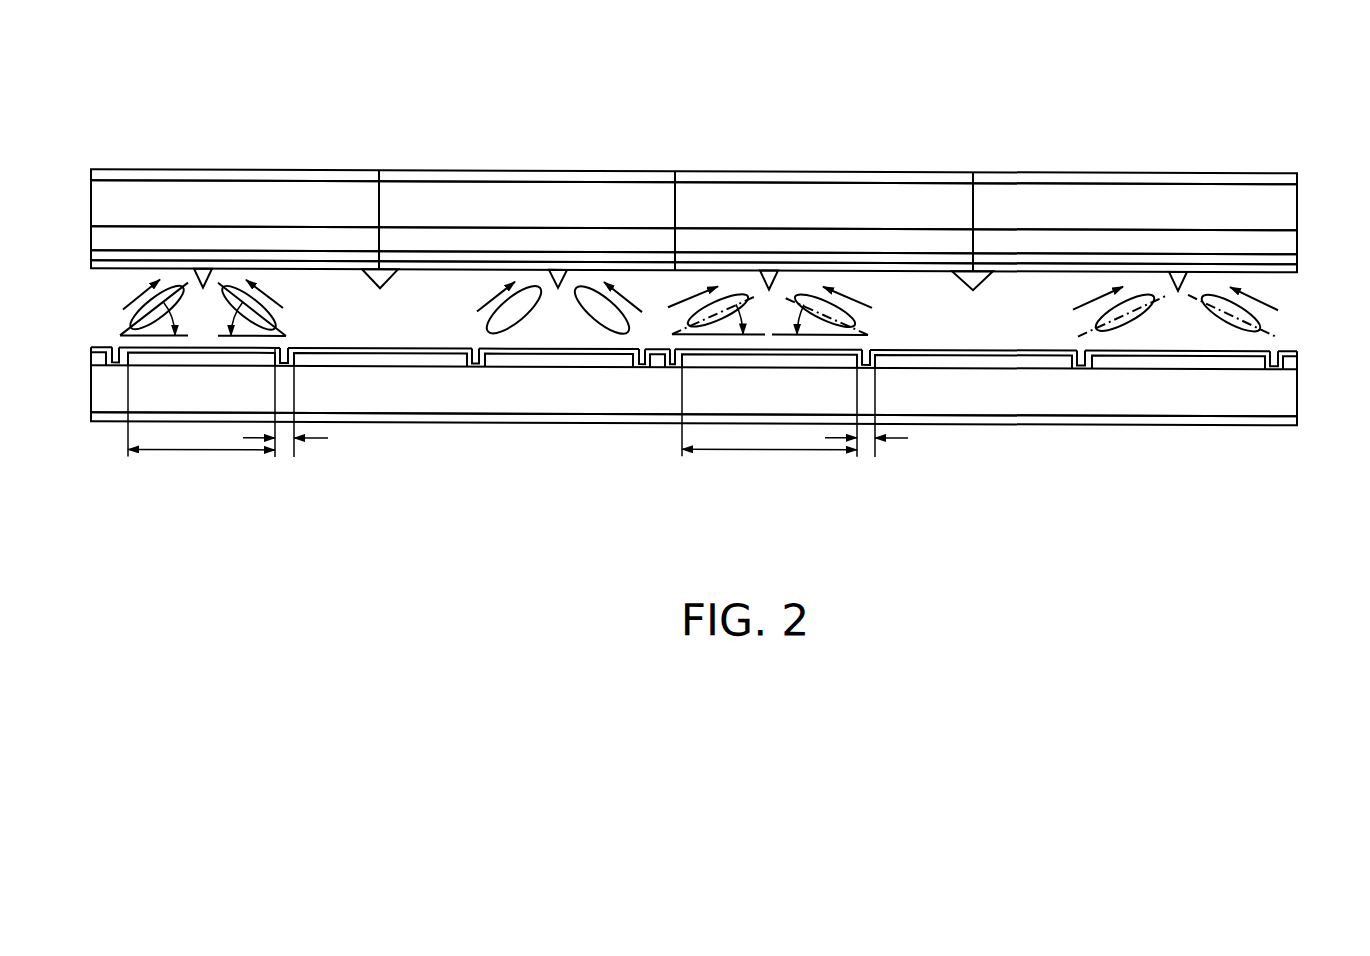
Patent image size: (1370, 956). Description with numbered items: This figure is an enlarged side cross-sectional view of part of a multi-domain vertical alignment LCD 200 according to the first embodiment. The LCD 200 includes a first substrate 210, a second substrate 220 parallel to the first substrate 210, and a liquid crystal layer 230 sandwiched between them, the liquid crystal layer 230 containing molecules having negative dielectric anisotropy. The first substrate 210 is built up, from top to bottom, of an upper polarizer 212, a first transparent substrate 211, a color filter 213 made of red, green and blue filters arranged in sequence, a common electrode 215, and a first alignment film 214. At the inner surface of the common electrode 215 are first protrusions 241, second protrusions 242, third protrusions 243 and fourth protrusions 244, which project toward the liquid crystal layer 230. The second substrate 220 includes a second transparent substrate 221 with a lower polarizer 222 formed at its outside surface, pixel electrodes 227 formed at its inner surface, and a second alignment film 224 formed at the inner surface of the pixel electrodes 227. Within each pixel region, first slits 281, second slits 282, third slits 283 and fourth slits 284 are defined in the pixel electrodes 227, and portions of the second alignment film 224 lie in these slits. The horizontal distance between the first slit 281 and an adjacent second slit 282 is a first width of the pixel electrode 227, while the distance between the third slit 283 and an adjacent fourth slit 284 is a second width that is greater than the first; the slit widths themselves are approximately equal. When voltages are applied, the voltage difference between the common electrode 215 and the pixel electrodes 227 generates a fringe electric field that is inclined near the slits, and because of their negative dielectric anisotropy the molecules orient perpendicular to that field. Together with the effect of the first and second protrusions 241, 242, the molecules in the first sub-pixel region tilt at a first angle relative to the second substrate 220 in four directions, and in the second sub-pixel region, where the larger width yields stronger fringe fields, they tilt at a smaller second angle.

The multi-domain vertical alignment LCD 200 is at (611, 81).
The first substrate 210 is at (715, 200).
The first transparent substrate 211 is at (298, 197).
The upper polarizer 212 is at (456, 176).
The color filter 213 is at (265, 237).
The first alignment film 214 is at (97, 266).
The common electrode 215 is at (162, 258).
The second substrate 220 is at (724, 414).
The second transparent substrate 221 is at (535, 395).
The lower polarizer 222 is at (1035, 417).
The second alignment film 224 is at (1222, 346).
The pixel electrode 227 is at (423, 360).
The liquid crystal layer 230 is at (1305, 281).
The first protrusion 241 is at (203, 268).
The second protrusion 242 is at (375, 268).
The third protrusion 243 is at (768, 285).
The fourth protrusion 244 is at (968, 268).
The first slit 281 is at (290, 346).
The second slit 282 is at (119, 356).
The third slit 283 is at (868, 349).
The fourth slit 284 is at (675, 363).